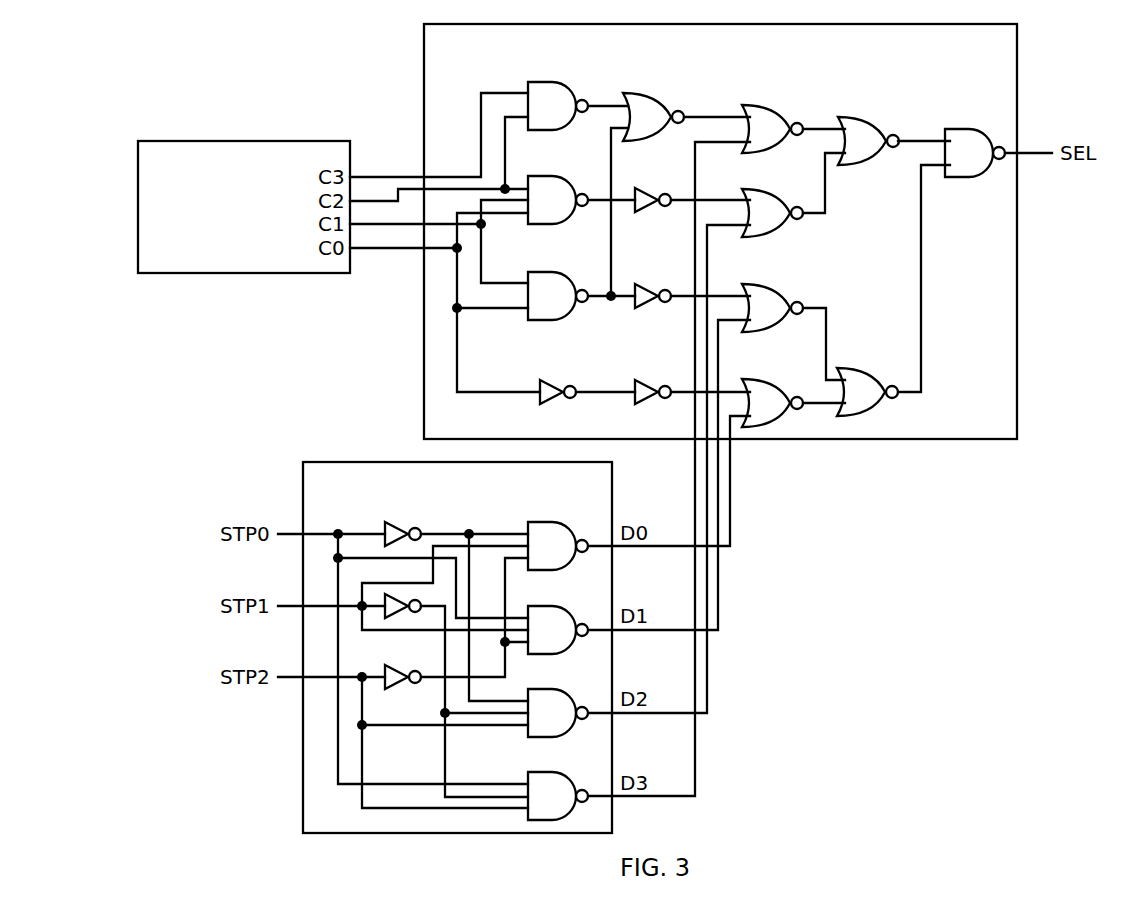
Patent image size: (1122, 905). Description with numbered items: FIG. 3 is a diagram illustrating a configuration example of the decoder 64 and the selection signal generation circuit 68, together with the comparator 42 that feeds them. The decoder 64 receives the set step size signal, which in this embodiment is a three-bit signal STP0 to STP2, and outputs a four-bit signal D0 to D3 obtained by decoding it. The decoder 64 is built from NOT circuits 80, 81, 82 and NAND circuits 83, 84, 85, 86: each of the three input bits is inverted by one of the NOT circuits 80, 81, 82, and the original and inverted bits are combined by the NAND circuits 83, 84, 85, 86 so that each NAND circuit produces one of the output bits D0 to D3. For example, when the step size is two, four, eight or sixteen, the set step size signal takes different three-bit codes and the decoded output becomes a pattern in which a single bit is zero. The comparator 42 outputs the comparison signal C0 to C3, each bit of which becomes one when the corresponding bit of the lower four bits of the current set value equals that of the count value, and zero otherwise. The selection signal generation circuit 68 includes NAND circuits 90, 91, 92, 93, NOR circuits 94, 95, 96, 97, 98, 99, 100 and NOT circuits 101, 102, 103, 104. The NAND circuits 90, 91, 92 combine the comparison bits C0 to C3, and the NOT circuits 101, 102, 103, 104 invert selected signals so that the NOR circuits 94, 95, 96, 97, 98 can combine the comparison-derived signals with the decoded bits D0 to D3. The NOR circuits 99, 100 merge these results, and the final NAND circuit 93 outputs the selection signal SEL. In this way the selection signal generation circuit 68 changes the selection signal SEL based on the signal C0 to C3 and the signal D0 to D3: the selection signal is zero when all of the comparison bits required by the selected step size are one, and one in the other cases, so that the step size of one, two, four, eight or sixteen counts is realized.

The comparator 42 is at (285, 141).
The decoder 64 is at (322, 462).
The selection signal generation circuit 68 is at (1017, 83).
The NOT circuit 80 is at (388, 520).
The NOT circuit 81 is at (388, 620).
The NOT circuit 82 is at (392, 689).
The NAND circuit 83 is at (553, 523).
The NAND circuit 84 is at (553, 607).
The NAND circuit 85 is at (553, 690).
The NAND circuit 86 is at (553, 773).
The NAND circuit 90 is at (553, 83).
The NAND circuit 91 is at (553, 177).
The NAND circuit 92 is at (553, 273).
The NAND circuit 93 is at (970, 130).
The NOR circuit 94 is at (645, 141).
The NOR circuit 95 is at (780, 106).
The NOR circuit 96 is at (780, 190).
The NOR circuit 97 is at (780, 285).
The NOR circuit 98 is at (780, 380).
The NOR circuit 99 is at (876, 118).
The NOR circuit 100 is at (860, 368).
The NOT circuit 101 is at (553, 404).
The NOT circuit 102 is at (648, 212).
The NOT circuit 103 is at (648, 308).
The NOT circuit 104 is at (648, 404).